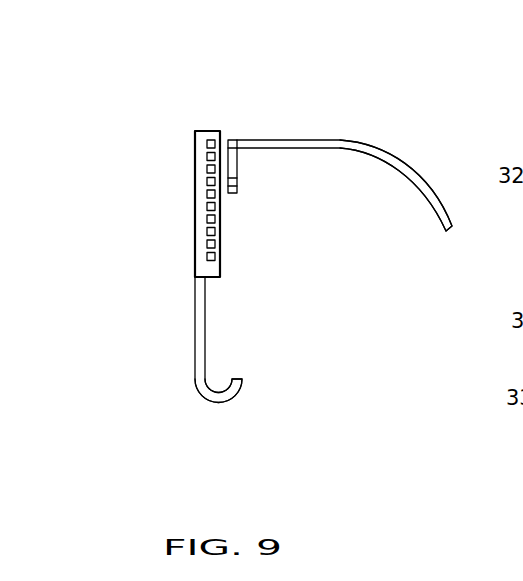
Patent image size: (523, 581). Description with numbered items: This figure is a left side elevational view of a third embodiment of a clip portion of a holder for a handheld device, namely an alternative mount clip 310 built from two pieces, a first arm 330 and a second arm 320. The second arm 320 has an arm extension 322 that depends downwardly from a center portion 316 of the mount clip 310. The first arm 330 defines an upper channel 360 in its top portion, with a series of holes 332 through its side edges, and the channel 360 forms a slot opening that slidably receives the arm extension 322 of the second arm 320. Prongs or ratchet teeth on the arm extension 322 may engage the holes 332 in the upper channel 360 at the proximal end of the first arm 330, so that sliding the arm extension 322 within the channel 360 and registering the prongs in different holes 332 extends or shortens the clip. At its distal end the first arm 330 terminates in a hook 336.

The mount clip 310 is at (146, 98).
The center portion 316 is at (361, 142).
The second arm 320 is at (433, 172).
The arm extension 322 is at (237, 168).
The first arm 330 is at (175, 307).
The holes 332 is at (207, 218).
The hook 336 is at (222, 404).
The upper channel 360 is at (161, 150).